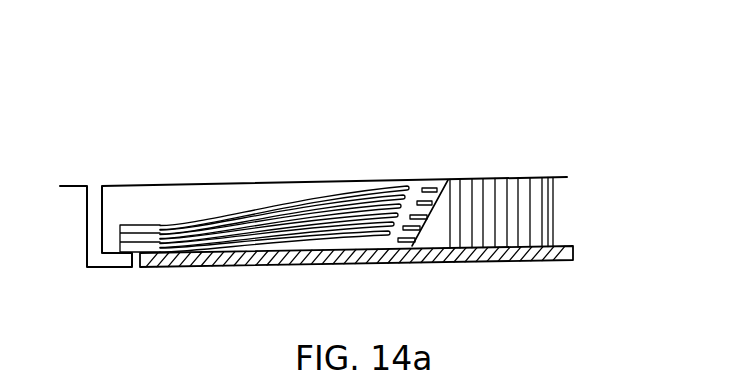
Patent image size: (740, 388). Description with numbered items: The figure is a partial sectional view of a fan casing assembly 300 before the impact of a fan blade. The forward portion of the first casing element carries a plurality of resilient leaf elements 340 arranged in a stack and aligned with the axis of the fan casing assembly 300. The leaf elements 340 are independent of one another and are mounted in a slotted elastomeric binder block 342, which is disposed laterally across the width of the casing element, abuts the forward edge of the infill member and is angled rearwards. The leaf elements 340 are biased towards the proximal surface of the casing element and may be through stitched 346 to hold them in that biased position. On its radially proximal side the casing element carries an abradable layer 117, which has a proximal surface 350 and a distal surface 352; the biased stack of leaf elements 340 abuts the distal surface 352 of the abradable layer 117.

The fan casing assembly 300 is at (553, 84).
The resilient leaf elements 340 is at (318, 190).
The slotted elastomeric binder block 342 is at (427, 183).
The through stitching 346 is at (157, 250).
The proximal surface 350 is at (533, 261).
The distal surface 352 is at (547, 243).
The abradable layer 117 is at (202, 268).